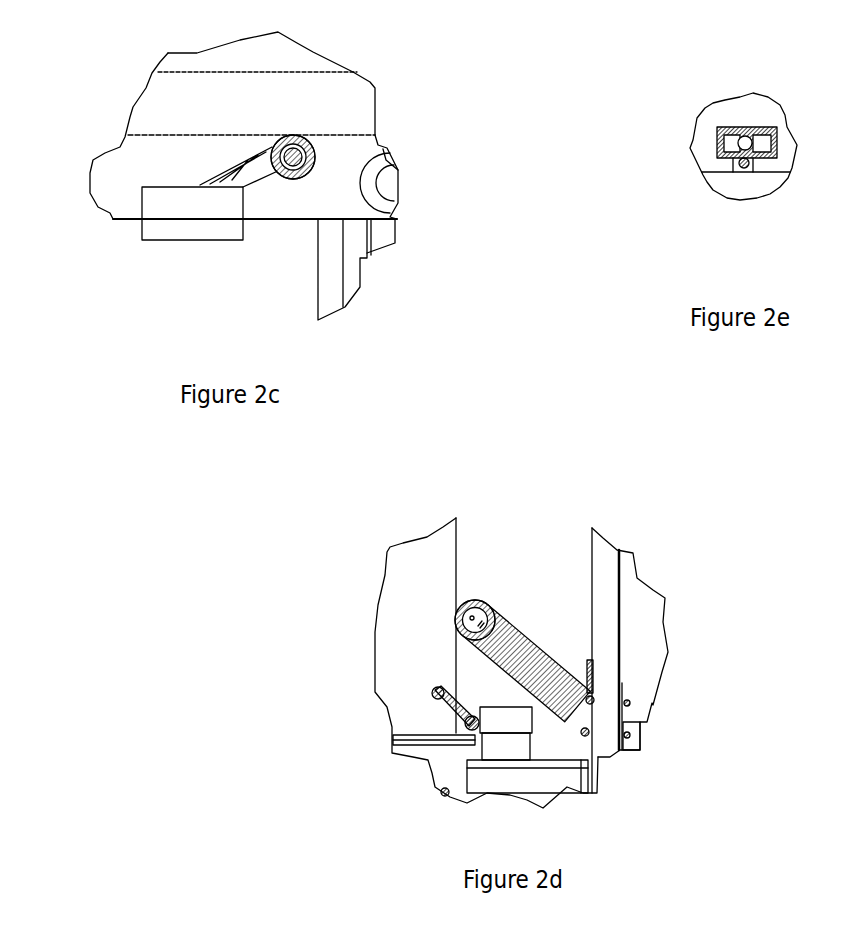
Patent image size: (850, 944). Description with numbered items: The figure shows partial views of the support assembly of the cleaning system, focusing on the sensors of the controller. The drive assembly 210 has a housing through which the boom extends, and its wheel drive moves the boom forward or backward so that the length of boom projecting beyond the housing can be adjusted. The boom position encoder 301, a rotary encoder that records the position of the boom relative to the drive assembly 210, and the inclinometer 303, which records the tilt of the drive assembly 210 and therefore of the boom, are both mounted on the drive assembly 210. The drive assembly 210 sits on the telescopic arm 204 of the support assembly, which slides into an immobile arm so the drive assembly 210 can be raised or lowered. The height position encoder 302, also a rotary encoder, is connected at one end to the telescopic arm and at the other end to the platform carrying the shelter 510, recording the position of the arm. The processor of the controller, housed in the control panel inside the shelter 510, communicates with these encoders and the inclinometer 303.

In FIG. 2C, the drive assembly 210 is at (213, 112).
In FIG. 2E, the drive assembly 210 is at (733, 115).
In FIG. 2C, the boom position encoder 301 is at (280, 172).
In FIG. 2E, the inclinometer 303 is at (727, 142).
In FIG. 2D, the height position encoder 302 is at (478, 598).
In FIG. 2D, the telescopic arm 204 is at (413, 653).
In FIG. 2D, the shelter 510 is at (607, 622).